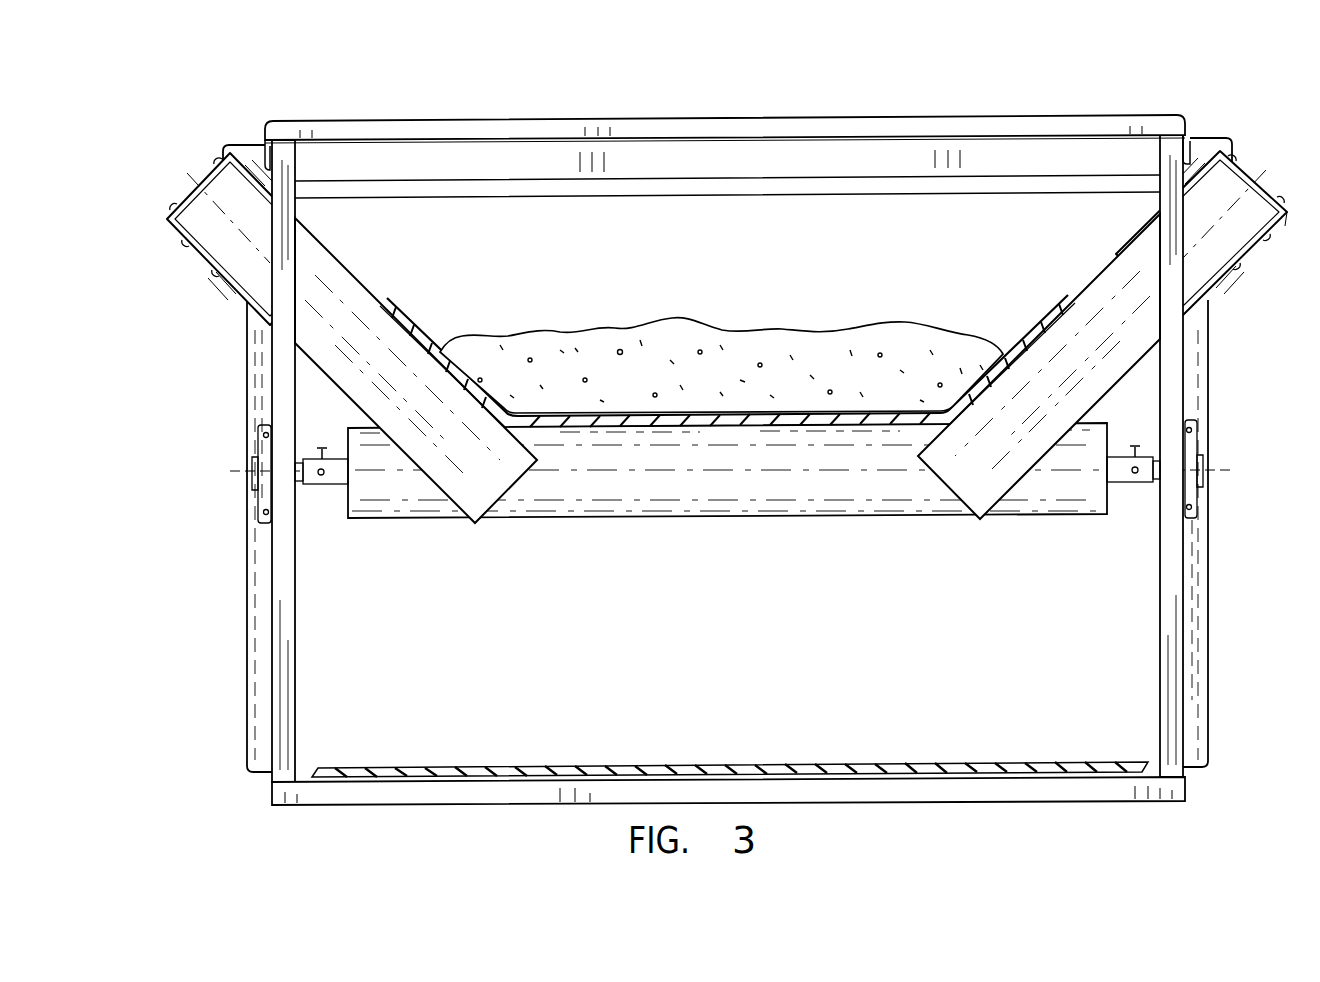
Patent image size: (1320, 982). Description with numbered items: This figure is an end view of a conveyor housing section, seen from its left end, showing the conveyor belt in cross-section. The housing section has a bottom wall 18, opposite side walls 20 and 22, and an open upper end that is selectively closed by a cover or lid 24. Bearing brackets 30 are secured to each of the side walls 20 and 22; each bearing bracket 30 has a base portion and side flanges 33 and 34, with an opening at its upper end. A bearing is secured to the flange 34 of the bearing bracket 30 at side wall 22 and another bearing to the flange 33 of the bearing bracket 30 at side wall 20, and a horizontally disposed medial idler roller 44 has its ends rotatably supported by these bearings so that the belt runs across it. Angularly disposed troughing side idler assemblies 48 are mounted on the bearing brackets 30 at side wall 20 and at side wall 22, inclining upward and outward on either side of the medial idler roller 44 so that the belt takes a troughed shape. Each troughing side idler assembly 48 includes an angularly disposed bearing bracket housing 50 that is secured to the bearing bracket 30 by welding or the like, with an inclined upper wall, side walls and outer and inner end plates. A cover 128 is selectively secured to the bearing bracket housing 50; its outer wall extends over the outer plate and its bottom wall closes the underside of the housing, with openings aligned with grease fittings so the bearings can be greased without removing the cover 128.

The bottom wall 18 is at (793, 782).
The side wall 20 is at (286, 676).
The side wall 22 is at (1167, 597).
The cover or lid 24 is at (805, 122).
The bearing bracket 30 is at (236, 586).
The side flange 33 is at (1198, 583).
The side flange 34 is at (247, 655).
The medial idler roller 44 is at (808, 492).
The troughing side idler assembly 48 is at (222, 145).
The bearing bracket housing 50 is at (322, 240).
The cover 128 is at (1285, 226).